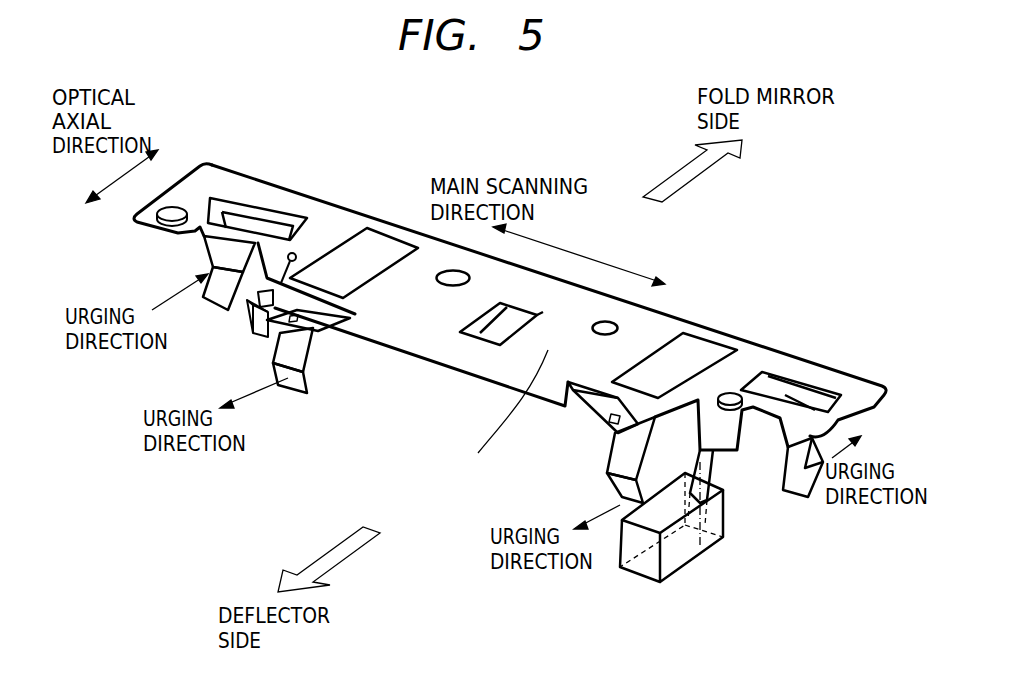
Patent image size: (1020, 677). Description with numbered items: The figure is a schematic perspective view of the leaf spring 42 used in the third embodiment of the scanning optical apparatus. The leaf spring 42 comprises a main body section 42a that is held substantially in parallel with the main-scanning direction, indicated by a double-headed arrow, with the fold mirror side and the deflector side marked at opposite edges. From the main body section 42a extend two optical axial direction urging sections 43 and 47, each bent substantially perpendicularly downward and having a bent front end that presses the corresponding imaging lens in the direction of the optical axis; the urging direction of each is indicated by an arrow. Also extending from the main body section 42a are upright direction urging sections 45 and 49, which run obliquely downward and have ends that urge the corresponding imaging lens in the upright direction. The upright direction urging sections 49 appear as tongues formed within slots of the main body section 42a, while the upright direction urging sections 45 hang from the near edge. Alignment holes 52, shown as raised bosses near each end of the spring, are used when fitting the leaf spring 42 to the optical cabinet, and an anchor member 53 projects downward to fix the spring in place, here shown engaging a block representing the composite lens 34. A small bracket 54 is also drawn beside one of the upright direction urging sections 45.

The composite lens 34 is at (642, 584).
The leaf spring 42 is at (216, 178).
The main body section 42a is at (502, 415).
The optical axial direction urging section 43 is at (200, 248).
The upright direction urging section 45 is at (273, 330).
The optical axial direction urging section 47 is at (806, 495).
The upright direction urging section 49 is at (262, 222).
The alignment hole 52 is at (172, 212).
The anchor member 53 is at (738, 465).
The bracket 54 is at (267, 298).